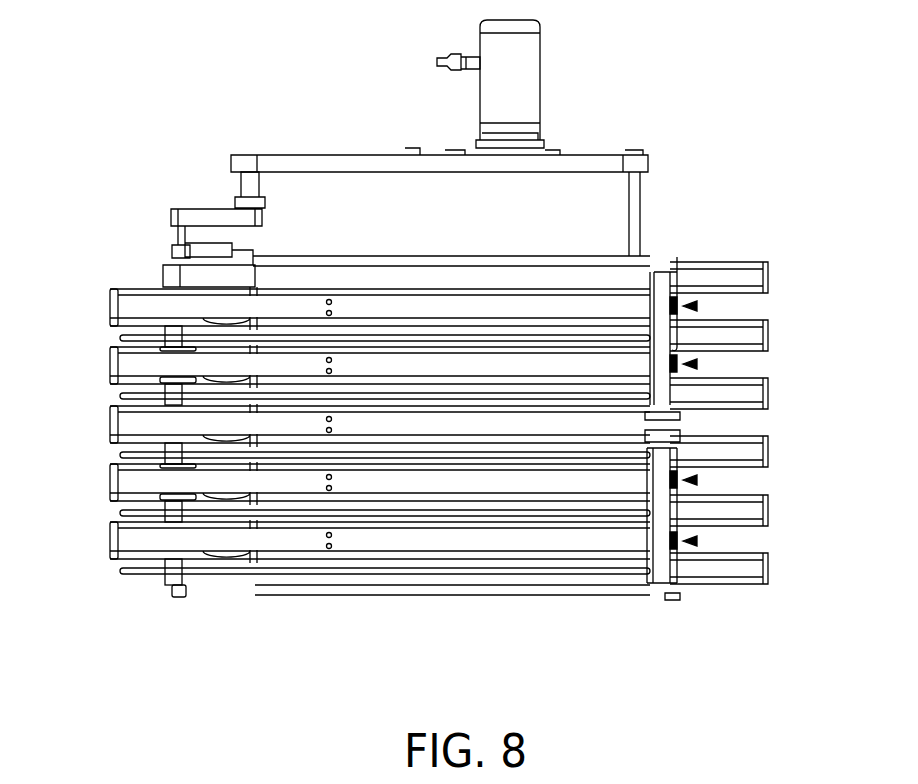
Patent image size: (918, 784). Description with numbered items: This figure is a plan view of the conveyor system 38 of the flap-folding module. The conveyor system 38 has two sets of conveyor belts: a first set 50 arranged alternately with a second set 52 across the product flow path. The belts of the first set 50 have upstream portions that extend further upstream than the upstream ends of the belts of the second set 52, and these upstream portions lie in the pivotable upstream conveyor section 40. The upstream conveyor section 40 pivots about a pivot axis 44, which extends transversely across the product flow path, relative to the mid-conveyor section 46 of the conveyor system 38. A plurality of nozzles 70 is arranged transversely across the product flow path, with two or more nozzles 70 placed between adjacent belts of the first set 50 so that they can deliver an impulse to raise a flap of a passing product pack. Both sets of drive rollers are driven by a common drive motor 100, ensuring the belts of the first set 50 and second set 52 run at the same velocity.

The common drive motor 100 is at (528, 70).
The conveyor system 38 is at (740, 233).
The second set of conveyor belts 52 is at (108, 542).
The first set of conveyor belts 50 is at (800, 570).
The nozzles 70 is at (837, 535).
The mid-conveyor section 46 is at (643, 617).
The pivot axis 44 is at (646, 600).
The upstream conveyor section 40 is at (770, 651).